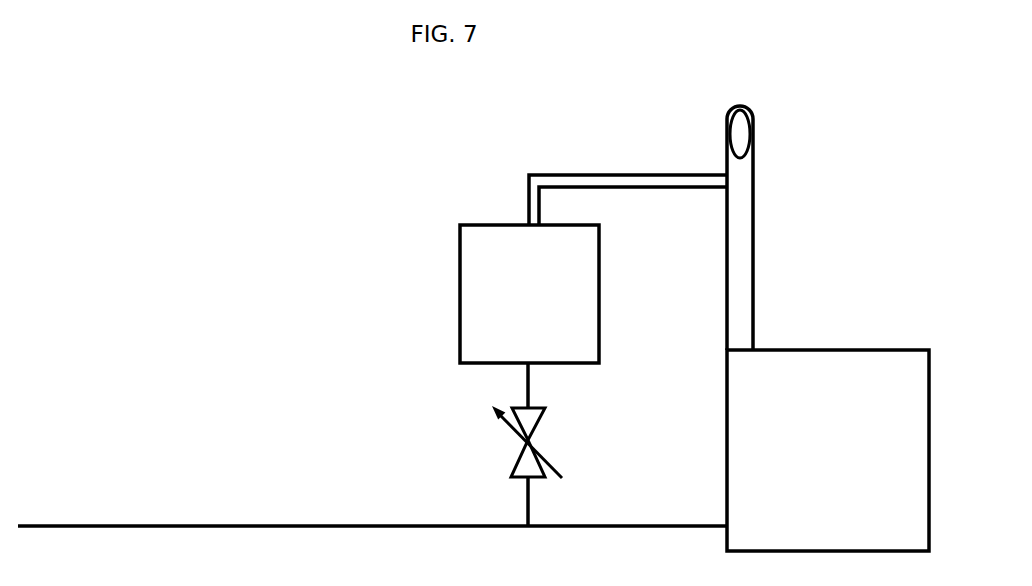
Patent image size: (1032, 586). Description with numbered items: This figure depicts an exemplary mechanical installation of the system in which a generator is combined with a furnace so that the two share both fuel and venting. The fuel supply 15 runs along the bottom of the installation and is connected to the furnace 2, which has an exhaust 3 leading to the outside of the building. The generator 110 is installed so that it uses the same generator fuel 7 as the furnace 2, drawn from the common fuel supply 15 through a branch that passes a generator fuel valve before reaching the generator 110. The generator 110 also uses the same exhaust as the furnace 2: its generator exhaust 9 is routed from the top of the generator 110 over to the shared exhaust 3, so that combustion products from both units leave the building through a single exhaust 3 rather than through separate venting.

The furnace 2 is at (828, 450).
The exhaust 3 is at (784, 220).
The generator exhaust 9 is at (585, 187).
The generator 110 is at (529, 294).
The generator fuel 7 is at (463, 444).
The fuel supply 15 is at (372, 489).